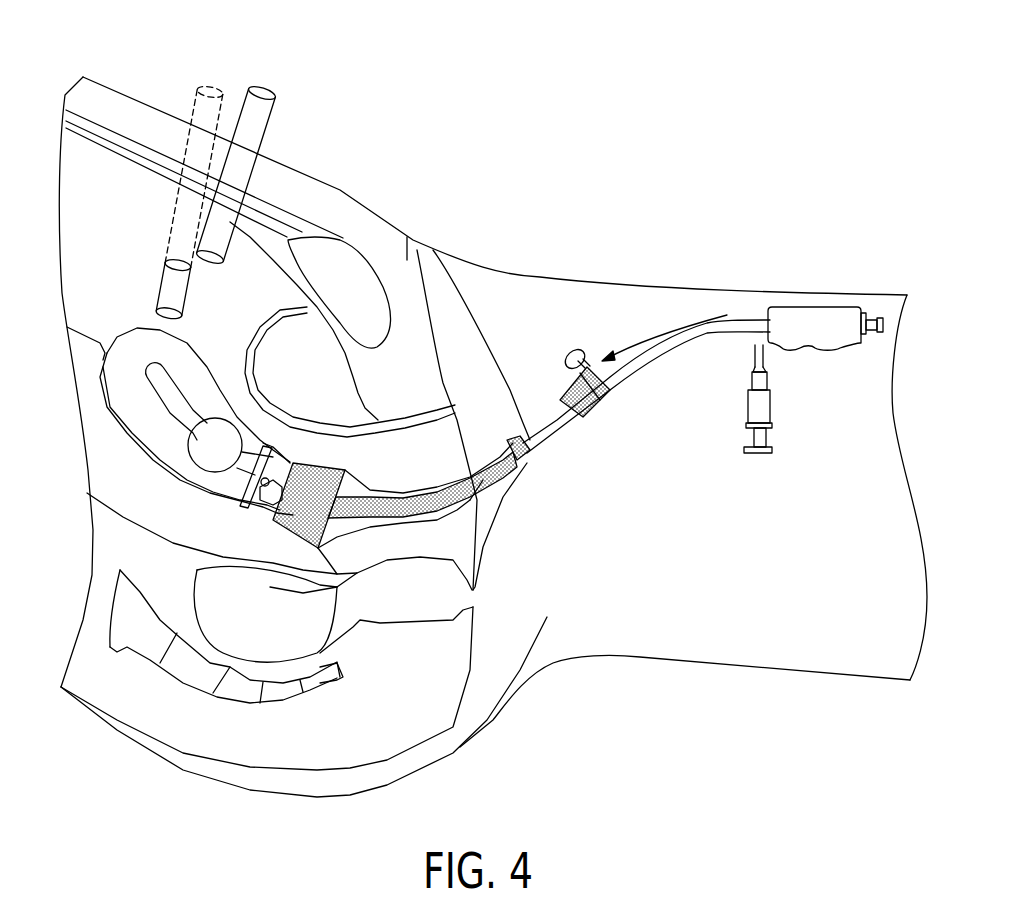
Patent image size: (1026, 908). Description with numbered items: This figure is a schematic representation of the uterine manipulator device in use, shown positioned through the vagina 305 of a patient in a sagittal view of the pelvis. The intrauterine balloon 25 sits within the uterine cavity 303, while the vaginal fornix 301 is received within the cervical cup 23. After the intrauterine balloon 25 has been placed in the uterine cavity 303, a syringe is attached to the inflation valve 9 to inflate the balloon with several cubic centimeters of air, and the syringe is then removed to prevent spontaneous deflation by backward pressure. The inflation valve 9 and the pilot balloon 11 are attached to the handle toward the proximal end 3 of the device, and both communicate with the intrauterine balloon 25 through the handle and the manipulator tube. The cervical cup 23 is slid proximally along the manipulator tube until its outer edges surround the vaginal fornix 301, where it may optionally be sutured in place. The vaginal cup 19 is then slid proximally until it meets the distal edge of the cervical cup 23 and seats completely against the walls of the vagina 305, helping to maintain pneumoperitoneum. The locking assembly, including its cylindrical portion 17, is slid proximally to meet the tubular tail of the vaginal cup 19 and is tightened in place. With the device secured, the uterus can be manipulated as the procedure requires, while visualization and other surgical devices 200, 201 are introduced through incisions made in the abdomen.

The proximal end 3 is at (813, 320).
The inflation valve 9 is at (753, 458).
The pilot balloon 11 is at (770, 407).
The cylindrical portion 17 is at (577, 405).
The vaginal cup 19 is at (303, 513).
The cervical cup 23 is at (243, 500).
The intrauterine balloon 25 is at (203, 447).
The surgical device 200 is at (257, 110).
The surgical device 201 is at (212, 87).
The vaginal fornix 301 is at (277, 462).
The uterine cavity 303 is at (153, 378).
The vagina 305 is at (479, 500).